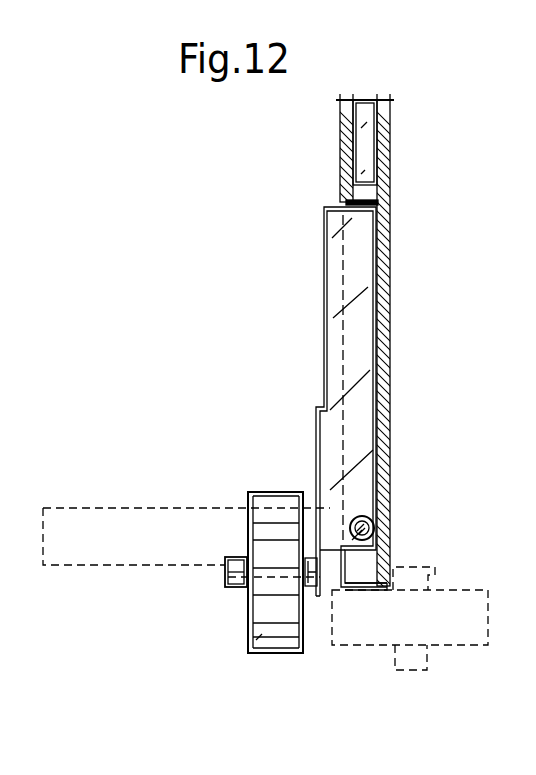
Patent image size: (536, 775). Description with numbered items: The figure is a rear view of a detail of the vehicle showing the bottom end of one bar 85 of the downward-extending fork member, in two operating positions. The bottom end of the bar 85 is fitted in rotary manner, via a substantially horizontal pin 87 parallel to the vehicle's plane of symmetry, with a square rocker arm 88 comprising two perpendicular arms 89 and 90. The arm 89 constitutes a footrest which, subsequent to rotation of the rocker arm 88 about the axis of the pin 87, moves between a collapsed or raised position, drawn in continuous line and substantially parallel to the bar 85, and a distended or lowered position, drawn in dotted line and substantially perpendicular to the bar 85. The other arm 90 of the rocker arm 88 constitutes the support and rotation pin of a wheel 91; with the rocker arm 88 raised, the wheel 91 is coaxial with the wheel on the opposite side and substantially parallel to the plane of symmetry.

The bar 85 is at (390, 170).
The pin 87 is at (378, 527).
The square rocker arm 88 is at (300, 450).
The arm 89 is at (330, 296).
The arm 90 is at (233, 588).
The wheel 91 is at (250, 640).